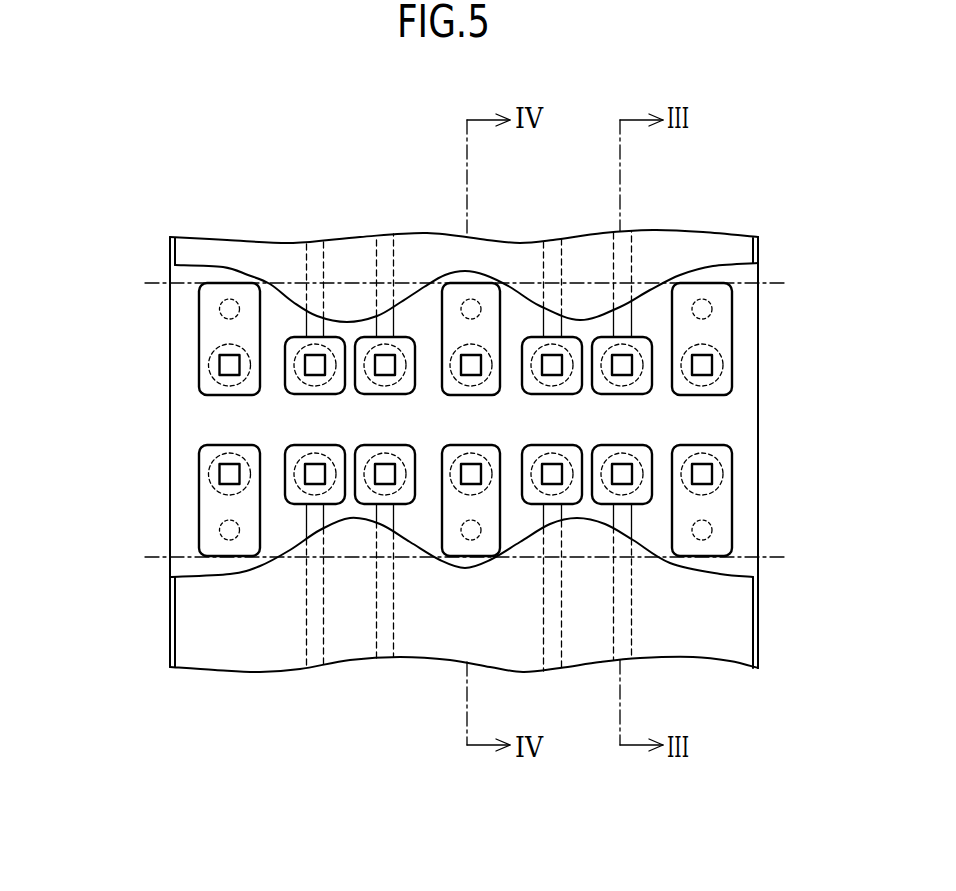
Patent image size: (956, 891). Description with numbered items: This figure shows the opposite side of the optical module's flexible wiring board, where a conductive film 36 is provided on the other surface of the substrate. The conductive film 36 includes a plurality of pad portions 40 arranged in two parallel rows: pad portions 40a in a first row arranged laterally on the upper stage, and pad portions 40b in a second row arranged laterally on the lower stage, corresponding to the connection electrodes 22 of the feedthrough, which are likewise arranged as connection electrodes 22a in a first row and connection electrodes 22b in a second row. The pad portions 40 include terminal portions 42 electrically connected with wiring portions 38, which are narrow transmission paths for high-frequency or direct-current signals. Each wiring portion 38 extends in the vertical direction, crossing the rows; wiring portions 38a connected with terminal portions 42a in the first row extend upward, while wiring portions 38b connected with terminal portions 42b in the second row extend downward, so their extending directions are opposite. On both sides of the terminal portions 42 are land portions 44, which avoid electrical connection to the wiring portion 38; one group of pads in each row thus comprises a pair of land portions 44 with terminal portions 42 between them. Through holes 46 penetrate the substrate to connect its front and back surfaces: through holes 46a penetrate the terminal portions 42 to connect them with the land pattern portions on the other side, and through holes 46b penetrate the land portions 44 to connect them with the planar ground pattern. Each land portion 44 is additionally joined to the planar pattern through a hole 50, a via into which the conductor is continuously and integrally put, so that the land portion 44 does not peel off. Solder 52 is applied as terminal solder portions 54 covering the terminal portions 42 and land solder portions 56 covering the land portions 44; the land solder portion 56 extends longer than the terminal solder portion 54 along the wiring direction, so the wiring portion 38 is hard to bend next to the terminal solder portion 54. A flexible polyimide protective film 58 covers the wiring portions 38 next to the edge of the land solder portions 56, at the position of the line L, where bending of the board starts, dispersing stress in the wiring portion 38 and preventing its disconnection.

The connection electrodes 22 is at (831, 362).
The connection electrodes in a first row 22a is at (707, 364).
The connection electrodes in a second row 22b is at (707, 470).
The conductive film 36 is at (347, 184).
The wiring portions 38 is at (464, 455).
The wiring portions 38a is at (335, 292).
The wiring portions 38b is at (318, 606).
The pad portions 40 is at (73, 362).
The pad portions in a first row 40a is at (167, 292).
The pad portions in a second row 40b is at (174, 475).
The terminal portions 42 is at (324, 404).
The terminal portions 42a is at (297, 338).
The terminal portions 42b is at (283, 492).
The land portions 44 is at (227, 281).
The through holes 46 is at (580, 422).
The through holes 46a is at (616, 382).
The through holes 46b is at (479, 383).
The hole 50 is at (471, 541).
The solder 52 is at (550, 193).
The terminal solder portions 54 is at (591, 312).
The land solder portions 56 is at (494, 312).
The protective film 58 is at (786, 631).
The line L is at (791, 577).